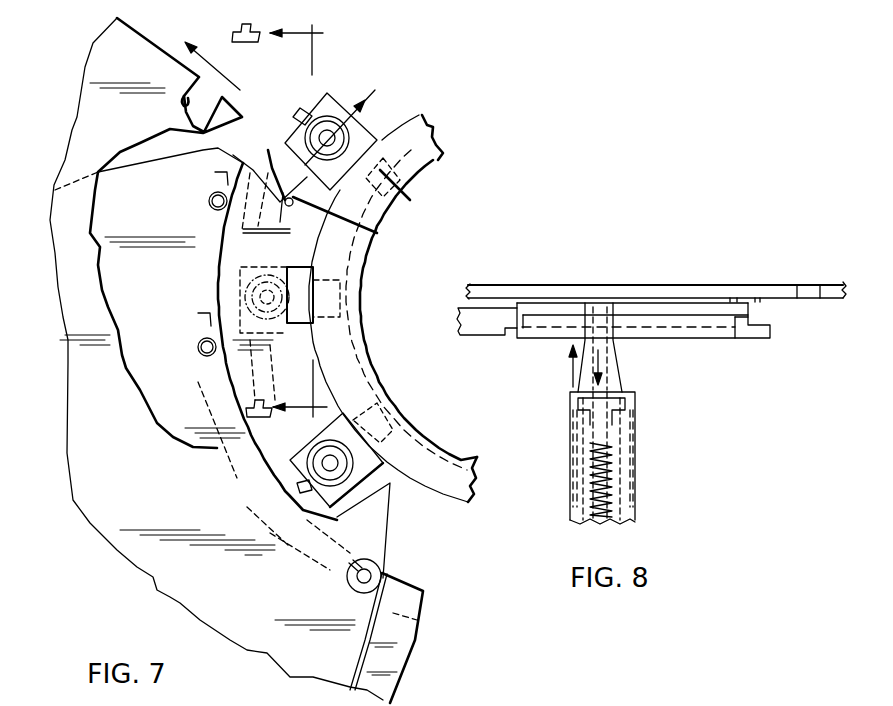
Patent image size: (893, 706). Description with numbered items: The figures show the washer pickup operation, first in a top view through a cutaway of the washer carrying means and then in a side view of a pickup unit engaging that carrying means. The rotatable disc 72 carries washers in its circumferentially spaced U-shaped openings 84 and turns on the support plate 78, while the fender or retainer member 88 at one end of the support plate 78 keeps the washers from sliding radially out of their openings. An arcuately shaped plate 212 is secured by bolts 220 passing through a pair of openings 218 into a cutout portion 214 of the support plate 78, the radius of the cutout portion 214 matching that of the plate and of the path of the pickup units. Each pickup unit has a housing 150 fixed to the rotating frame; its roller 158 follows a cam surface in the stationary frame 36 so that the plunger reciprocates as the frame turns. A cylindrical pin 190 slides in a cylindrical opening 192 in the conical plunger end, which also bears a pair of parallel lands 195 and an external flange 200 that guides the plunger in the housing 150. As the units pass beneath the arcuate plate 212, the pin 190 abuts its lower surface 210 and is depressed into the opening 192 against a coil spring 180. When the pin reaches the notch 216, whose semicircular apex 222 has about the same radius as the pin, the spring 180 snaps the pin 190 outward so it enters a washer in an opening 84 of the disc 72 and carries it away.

In FIG. 7, the frame 36 is at (356, 372).
In FIG. 7, the rotatable disc 72 is at (259, 581).
In FIG. 8, the rotatable disc 72 is at (727, 290).
In FIG. 7, the support plate 78 is at (216, 359).
In FIG. 7, the U-shaped openings 84 is at (183, 97).
In FIG. 8, the U-shaped openings 84 is at (808, 290).
In FIG. 7, the fender or retainer member 88 is at (405, 633).
In FIG. 7, the housing 150 is at (372, 118).
In FIG. 7, the roller 158 is at (406, 197).
In FIG. 8, the coil spring 180 is at (608, 462).
In FIG. 7, the cylindrical pin 190 is at (262, 295).
In FIG. 8, the cylindrical pin 190 is at (600, 403).
In FIG. 8, the cylindrical opening 192 is at (618, 370).
In FIG. 8, the parallel lands 195 is at (592, 300).
In FIG. 7, the external flange 200 is at (321, 125).
In FIG. 8, the lower surface 210 is at (530, 306).
In FIG. 7, the arcuately shaped plate 212 is at (253, 208).
In FIG. 8, the arcuately shaped plate 212 is at (742, 330).
In FIG. 7, the cutout portion 214 is at (268, 522).
In FIG. 7, the notch 216 is at (278, 157).
In FIG. 7, the openings 218 is at (215, 174).
In FIG. 7, the bolts 220 is at (210, 201).
In FIG. 7, the apex 222 is at (359, 224).